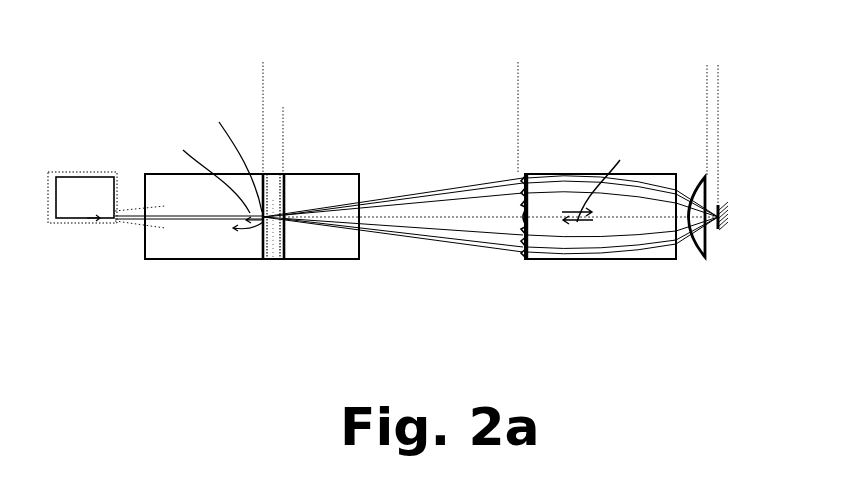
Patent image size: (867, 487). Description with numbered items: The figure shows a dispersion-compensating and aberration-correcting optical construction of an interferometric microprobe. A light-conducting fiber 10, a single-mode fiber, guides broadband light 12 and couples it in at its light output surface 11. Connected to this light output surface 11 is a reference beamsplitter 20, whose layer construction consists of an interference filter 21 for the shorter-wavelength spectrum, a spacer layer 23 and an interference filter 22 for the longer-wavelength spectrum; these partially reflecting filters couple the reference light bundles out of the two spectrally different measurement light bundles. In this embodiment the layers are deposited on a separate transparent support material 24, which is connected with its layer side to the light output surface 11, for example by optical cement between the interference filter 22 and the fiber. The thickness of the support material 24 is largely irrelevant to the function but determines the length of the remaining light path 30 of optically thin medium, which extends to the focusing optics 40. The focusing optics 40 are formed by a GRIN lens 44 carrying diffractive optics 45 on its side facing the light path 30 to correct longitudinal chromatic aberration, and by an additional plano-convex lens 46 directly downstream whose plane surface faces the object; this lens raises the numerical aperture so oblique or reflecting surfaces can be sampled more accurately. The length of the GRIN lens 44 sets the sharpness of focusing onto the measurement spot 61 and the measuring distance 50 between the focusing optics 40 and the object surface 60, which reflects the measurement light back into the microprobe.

The light-conducting fiber 10 is at (263, 66).
The light output surface 11 is at (285, 174).
The broadband light 12 is at (82, 197).
The reference beamsplitter 20 is at (263, 107).
The interference filter 21 is at (284, 259).
The interference filter 22 is at (263, 259).
The spacer layer 23 is at (273, 259).
The support material 24 is at (343, 242).
The light path 30 is at (518, 66).
The focusing optics 40 is at (710, 66).
The GRIN lens 44 is at (645, 260).
The diffractive optics 45 is at (522, 262).
The plano-convex lens 46 is at (700, 255).
The measuring distance 50 is at (712, 66).
The object surface 60 is at (722, 232).
The measurement spot 61 is at (716, 230).